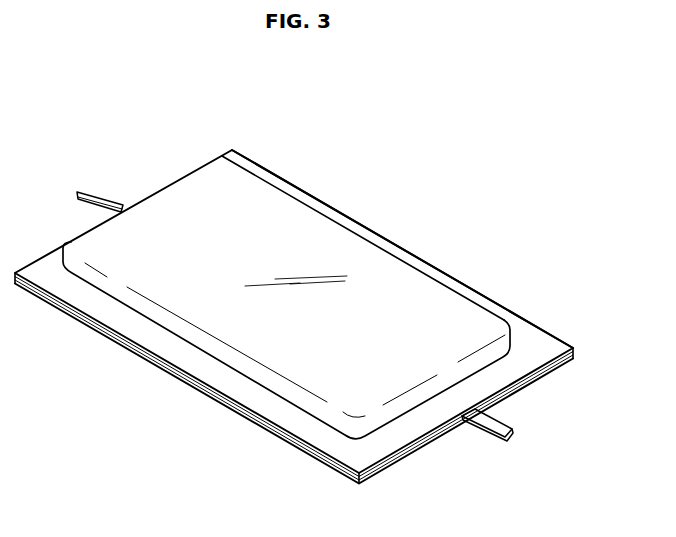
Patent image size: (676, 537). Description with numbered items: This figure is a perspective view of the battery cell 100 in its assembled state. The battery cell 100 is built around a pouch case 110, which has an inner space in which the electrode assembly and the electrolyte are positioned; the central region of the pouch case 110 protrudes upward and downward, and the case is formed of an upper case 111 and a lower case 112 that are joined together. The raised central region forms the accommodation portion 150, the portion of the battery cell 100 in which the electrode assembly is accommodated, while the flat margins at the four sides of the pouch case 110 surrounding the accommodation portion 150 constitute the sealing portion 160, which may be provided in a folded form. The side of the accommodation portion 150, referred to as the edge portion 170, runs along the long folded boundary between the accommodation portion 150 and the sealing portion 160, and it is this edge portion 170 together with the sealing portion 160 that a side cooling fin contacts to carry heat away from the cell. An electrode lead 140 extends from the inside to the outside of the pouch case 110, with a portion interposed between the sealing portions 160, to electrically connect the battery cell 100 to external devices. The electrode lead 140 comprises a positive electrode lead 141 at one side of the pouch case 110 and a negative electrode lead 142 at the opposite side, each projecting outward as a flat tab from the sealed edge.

The battery cell 100 is at (180, 96).
The pouch case 110 is at (167, 408).
The upper case 111 is at (237, 407).
The lower case 112 is at (253, 421).
The electrode lead 140 is at (482, 437).
The positive electrode lead 141 is at (500, 429).
The negative electrode lead 142 is at (91, 195).
The accommodation portion 150 is at (407, 305).
The sealing portion 160 is at (385, 245).
The edge portion 170 is at (318, 212).